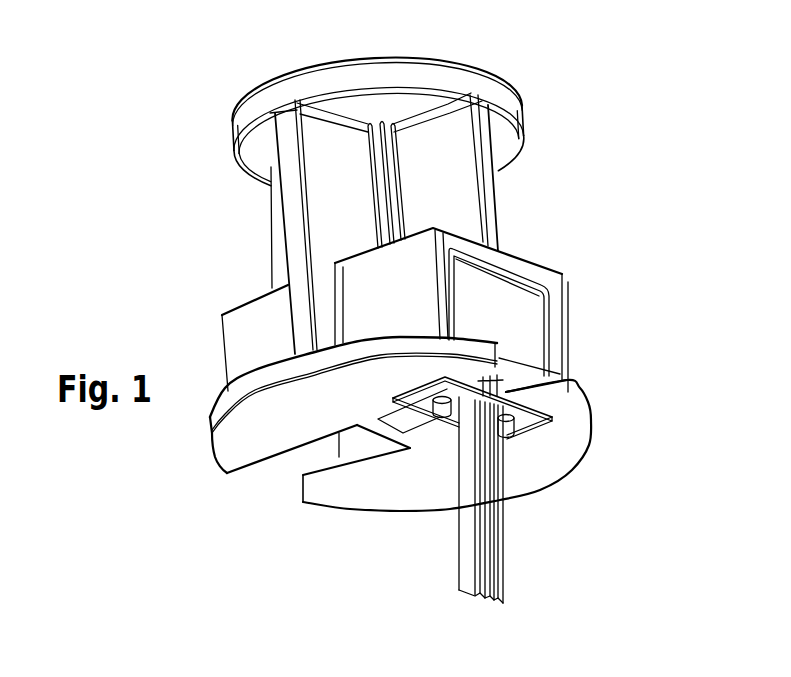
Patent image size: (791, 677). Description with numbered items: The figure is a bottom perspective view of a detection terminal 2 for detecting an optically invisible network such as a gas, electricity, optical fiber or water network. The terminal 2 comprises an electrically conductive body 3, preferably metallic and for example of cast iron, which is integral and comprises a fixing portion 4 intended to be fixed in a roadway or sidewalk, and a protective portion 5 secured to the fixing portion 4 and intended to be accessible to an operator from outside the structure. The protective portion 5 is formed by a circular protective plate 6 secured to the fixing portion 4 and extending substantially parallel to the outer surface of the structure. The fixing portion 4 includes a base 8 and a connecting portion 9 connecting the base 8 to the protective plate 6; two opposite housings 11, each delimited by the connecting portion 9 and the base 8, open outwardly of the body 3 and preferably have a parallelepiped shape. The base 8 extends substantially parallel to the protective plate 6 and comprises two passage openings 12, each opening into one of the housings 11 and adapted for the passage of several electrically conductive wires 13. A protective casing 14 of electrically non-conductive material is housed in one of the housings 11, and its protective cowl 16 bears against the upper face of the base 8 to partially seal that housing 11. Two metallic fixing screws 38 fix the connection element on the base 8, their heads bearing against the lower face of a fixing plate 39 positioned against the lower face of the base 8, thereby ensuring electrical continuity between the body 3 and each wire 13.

The detection terminal 2 is at (633, 213).
The electrically conductive body 3 is at (258, 283).
The fixing portion 4 is at (459, 209).
The protective portion 5 is at (278, 95).
The protective plate 6 is at (498, 91).
The base 8 is at (567, 446).
The connecting portion 9 is at (291, 211).
The housing 11 is at (341, 449).
The passage opening 12 is at (378, 463).
The electrically conductive wire 13 is at (473, 538).
The protective casing 14 is at (519, 319).
The protective cowl 16 is at (494, 293).
The fixing screw 38 is at (507, 437).
The fixing plate 39 is at (534, 422).